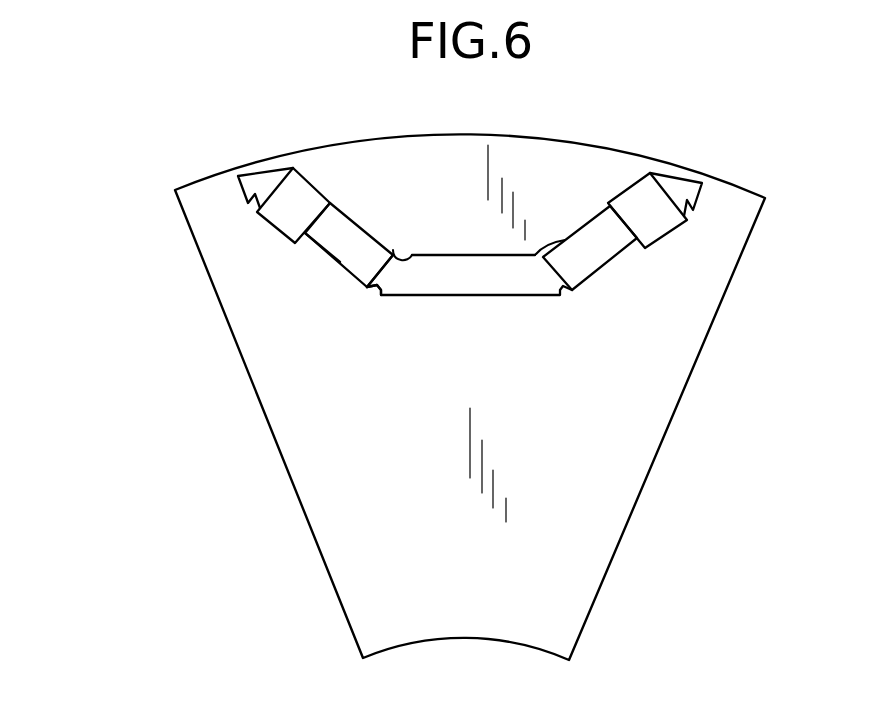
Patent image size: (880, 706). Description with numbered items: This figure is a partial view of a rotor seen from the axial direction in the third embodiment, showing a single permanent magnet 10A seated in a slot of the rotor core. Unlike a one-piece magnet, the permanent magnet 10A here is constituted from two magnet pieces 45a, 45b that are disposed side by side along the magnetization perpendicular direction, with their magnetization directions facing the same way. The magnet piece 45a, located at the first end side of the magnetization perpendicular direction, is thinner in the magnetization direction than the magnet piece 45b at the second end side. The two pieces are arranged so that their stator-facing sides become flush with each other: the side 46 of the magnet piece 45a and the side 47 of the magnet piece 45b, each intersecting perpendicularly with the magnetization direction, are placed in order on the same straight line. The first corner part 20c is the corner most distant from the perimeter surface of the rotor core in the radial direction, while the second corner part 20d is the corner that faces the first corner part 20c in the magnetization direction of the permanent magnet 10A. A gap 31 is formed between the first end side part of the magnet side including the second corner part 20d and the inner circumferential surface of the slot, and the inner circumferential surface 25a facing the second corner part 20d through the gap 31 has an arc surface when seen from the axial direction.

The side 47 is at (313, 186).
The side 46 is at (331, 249).
The gap 31 is at (392, 253).
The inner circumferential surface 25a is at (410, 255).
The magnet piece 45b is at (277, 229).
The magnet piece 45a is at (331, 248).
The permanent magnet 10A is at (248, 395).
The first corner part 20c is at (367, 287).
The second corner part 20d is at (393, 255).